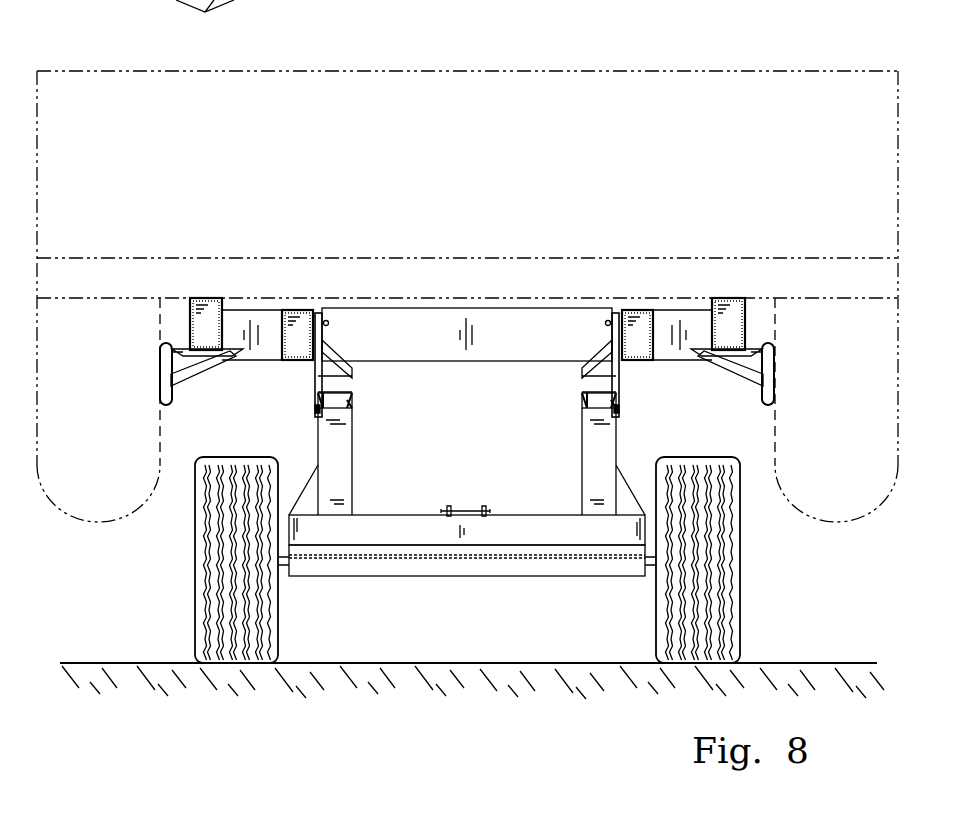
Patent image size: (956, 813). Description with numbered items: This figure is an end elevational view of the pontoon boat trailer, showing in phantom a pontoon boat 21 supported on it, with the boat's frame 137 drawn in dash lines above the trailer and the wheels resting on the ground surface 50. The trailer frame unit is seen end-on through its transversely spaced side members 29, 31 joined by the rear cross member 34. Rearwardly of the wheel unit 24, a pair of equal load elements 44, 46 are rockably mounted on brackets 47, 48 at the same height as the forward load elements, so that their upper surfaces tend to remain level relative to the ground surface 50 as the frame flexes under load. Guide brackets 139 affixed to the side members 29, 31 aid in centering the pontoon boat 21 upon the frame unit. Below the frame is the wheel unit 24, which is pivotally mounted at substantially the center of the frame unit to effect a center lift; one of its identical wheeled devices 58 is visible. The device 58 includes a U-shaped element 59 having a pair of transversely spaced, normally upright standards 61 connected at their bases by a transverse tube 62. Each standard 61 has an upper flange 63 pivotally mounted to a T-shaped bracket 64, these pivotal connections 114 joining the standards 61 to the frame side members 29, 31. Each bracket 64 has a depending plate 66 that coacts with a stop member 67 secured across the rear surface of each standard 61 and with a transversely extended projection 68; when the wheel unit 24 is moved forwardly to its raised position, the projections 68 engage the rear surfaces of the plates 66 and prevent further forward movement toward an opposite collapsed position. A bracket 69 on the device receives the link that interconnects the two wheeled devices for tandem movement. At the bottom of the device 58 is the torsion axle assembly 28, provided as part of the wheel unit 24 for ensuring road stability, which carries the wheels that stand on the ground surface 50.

The pontoon boat 21 is at (722, 66).
The frame 137 is at (88, 268).
The equal load element 46 is at (198, 296).
The equal load element 44 is at (730, 297).
The bracket 48 is at (257, 350).
The bracket 47 is at (678, 352).
The side member 31 is at (284, 308).
The side member 29 is at (630, 308).
The rear cross member 34 is at (456, 314).
The pivotal connection 114 is at (327, 314).
The upper flange 63 is at (335, 348).
The depending plate 66 is at (330, 382).
The stop member 67 is at (349, 409).
The standard 61 is at (347, 466).
The projection 68 is at (317, 411).
The T-shaped bracket 64 is at (297, 392).
The guide bracket 139 is at (182, 375).
The transverse tube 62 is at (374, 521).
The torsion axle assembly 28 is at (407, 588).
The wheeled device 58 is at (405, 480).
The U-shaped element 59 is at (568, 507).
The bracket 69 is at (487, 503).
The wheel unit 24 is at (160, 556).
The ground surface 50 is at (557, 662).